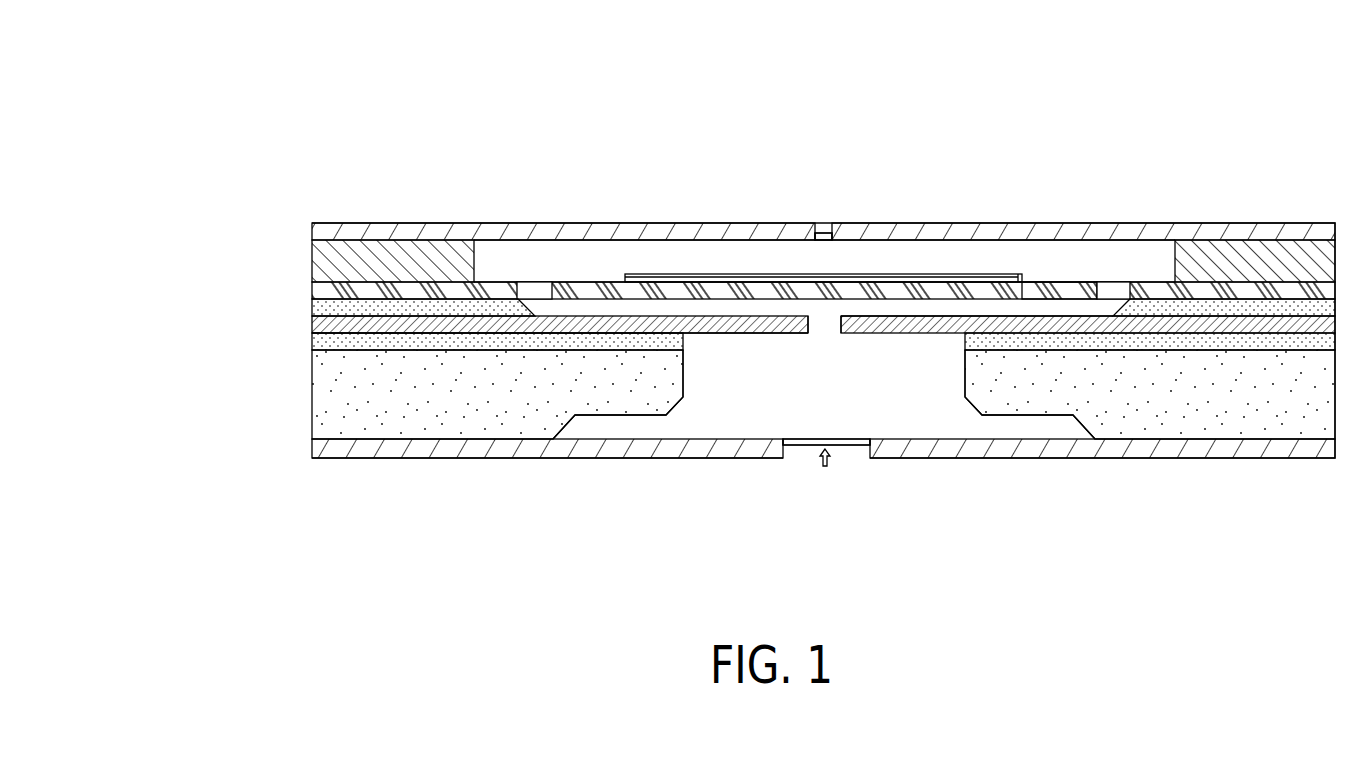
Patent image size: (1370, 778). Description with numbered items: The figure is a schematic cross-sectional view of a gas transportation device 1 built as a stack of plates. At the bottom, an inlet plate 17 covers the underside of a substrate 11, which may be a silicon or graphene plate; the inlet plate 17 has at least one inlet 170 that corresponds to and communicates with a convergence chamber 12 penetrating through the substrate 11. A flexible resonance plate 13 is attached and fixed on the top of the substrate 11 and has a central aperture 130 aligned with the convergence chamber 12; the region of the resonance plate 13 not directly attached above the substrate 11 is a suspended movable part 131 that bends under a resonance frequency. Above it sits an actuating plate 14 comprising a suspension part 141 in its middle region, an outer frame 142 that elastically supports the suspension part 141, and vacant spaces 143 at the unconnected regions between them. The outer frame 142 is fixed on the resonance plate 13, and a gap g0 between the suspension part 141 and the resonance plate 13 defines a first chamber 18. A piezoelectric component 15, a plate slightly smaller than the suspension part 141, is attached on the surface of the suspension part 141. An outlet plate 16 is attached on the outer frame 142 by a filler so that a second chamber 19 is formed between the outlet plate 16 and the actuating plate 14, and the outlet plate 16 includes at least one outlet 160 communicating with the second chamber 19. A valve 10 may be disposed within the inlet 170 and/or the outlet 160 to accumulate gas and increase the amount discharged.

The gas transportation device 1 is at (1247, 69).
The valve 10 is at (830, 238).
The substrate 11 is at (342, 402).
The convergence chamber 12 is at (755, 397).
The resonance plate 13 is at (312, 325).
The central aperture 130 is at (823, 362).
The movable part 131 is at (728, 333).
The actuating plate 14 is at (332, 287).
The suspension part 141 is at (1028, 290).
The outer frame 142 is at (422, 290).
The vacant space 143 is at (537, 292).
The piezoelectric component 15 is at (633, 277).
The outlet plate 16 is at (332, 232).
The outlet 160 is at (840, 196).
The inlet plate 17 is at (332, 446).
The inlet 170 is at (850, 480).
The first chamber 18 is at (893, 310).
The second chamber 19 is at (930, 257).
The gap g0 is at (333, 310).